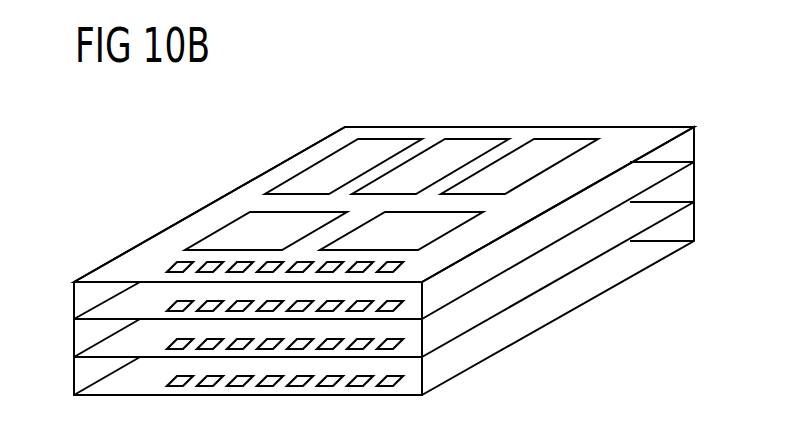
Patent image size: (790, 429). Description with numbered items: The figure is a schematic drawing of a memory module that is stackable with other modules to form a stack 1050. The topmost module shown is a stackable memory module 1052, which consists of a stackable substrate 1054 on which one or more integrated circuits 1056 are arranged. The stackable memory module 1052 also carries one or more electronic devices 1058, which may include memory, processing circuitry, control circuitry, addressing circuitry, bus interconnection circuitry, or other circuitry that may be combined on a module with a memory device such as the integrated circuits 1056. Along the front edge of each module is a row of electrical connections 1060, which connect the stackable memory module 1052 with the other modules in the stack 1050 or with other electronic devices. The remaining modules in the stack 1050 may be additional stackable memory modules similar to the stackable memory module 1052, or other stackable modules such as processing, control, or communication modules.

The stack 1050 is at (545, 80).
The stackable memory module 1052 is at (353, 126).
The stackable substrate 1054 is at (240, 198).
The integrated circuits 1056 is at (320, 178).
The electronic devices 1058 is at (235, 237).
The electrical connections 1060 is at (180, 263).